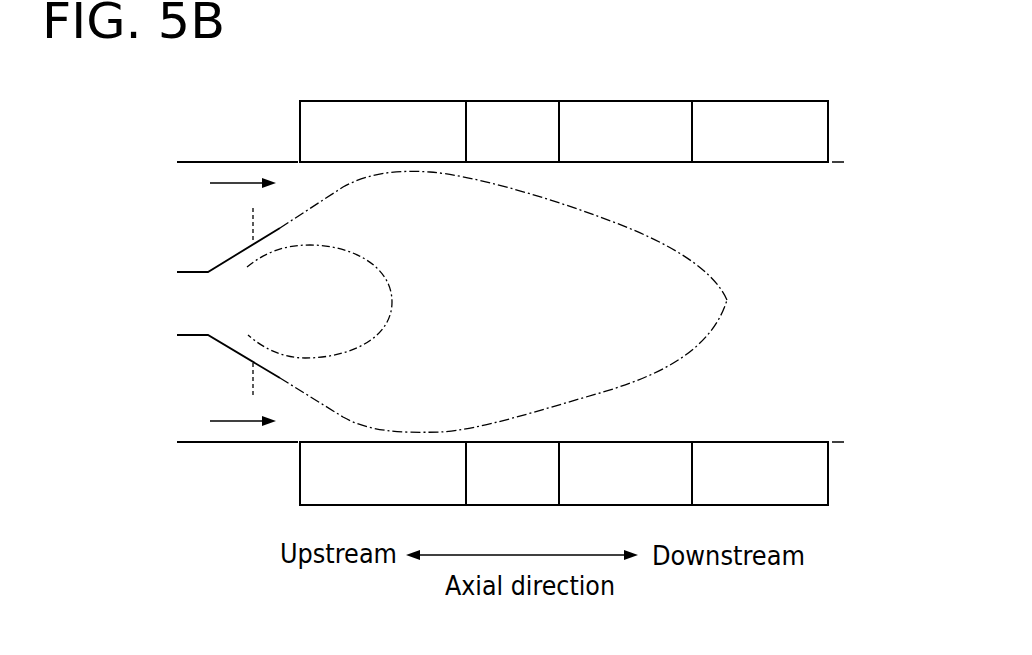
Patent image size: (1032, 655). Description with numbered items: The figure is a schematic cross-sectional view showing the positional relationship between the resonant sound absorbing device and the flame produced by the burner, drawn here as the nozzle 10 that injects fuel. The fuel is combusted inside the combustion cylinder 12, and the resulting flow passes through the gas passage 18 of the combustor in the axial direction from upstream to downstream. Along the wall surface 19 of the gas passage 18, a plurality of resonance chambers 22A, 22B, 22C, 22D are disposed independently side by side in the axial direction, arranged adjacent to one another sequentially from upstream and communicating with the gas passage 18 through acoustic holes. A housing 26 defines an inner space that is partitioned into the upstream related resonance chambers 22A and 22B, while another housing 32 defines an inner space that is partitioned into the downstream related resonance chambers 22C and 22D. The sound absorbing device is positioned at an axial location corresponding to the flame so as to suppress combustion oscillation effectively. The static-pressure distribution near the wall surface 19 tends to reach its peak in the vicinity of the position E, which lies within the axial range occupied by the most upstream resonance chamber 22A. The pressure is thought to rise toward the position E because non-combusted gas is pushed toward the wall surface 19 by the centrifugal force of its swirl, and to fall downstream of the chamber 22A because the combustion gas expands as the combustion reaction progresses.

The nozzle 10 is at (294, 369).
The combustion cylinder 12 is at (233, 160).
The gas passage 18 is at (797, 305).
The wall surface 19 is at (315, 164).
The resonance chamber 22A is at (408, 143).
The resonance chamber 22B is at (535, 143).
The resonance chamber 22C is at (651, 143).
The resonance chamber 22D is at (782, 143).
The housing 26 is at (413, 100).
The housing 32 is at (740, 101).
The position E is at (368, 172).